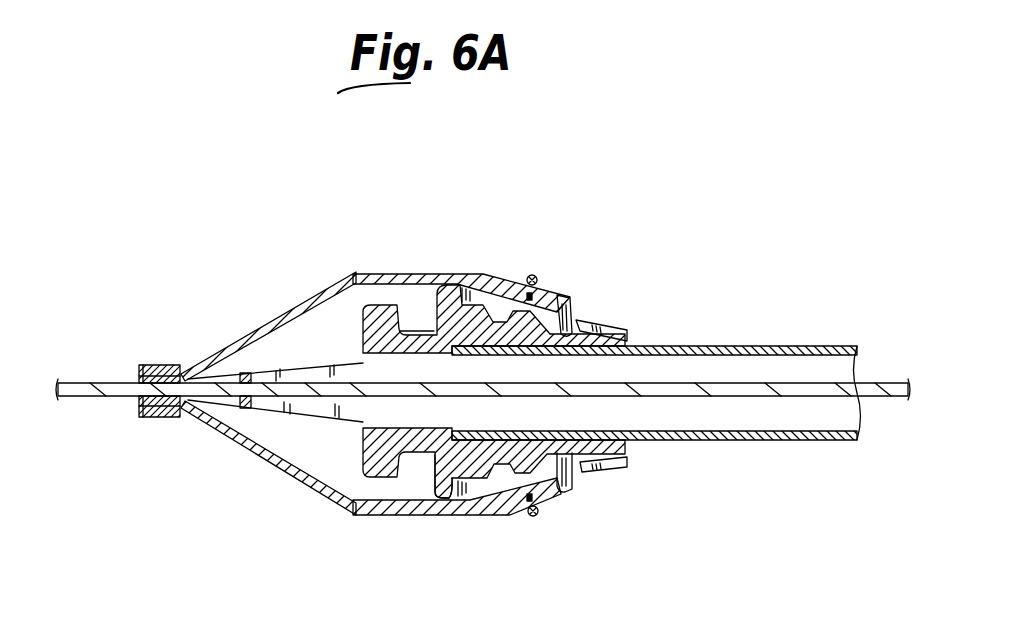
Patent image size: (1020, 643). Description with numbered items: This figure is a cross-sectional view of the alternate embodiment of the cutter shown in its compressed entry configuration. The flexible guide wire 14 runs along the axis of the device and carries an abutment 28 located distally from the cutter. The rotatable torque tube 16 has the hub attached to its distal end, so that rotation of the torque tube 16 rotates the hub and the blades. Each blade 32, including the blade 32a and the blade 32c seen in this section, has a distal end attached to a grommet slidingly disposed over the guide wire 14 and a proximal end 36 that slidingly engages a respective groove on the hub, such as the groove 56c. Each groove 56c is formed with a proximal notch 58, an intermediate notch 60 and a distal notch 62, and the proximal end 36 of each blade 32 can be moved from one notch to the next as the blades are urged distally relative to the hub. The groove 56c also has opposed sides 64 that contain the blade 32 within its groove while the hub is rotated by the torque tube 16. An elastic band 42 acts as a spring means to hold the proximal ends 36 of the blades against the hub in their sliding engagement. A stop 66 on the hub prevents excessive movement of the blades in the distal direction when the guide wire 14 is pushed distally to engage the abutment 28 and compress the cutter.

The flexible guide wire 14 is at (900, 388).
The torque tube 16 is at (762, 346).
The abutment 28 is at (243, 373).
The blade 32 is at (146, 365).
The blade 32a is at (365, 272).
The blade 32c is at (368, 518).
The proximal end 36 is at (567, 325).
The elastic band 42 is at (533, 275).
The groove 56c is at (507, 483).
The proximal notch 58 is at (580, 318).
The intermediate notch 60 is at (490, 305).
The distal notch 62 is at (418, 333).
The opposed sides 64 is at (450, 499).
The stop 66 is at (398, 478).